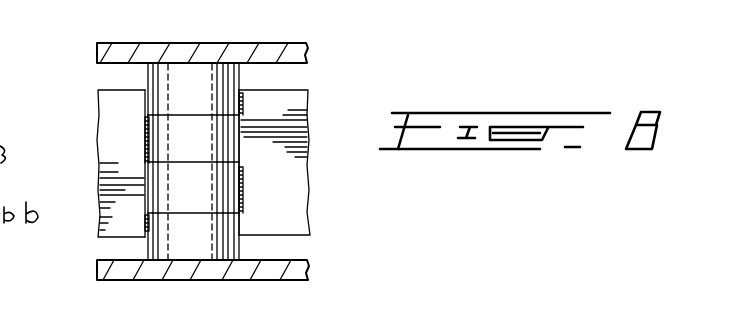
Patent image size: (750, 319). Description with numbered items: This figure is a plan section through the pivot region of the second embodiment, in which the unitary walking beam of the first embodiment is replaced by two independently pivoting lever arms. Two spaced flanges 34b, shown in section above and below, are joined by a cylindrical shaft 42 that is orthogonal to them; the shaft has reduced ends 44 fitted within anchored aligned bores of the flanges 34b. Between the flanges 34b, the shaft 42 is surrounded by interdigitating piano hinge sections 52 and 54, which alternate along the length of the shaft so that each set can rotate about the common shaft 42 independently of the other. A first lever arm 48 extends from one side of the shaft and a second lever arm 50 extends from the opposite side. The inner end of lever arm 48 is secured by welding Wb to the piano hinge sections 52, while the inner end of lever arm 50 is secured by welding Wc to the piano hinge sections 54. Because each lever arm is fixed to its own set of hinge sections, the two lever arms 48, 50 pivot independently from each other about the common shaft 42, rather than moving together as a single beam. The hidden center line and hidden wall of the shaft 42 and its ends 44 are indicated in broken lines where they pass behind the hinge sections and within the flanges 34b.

The flanges 34b is at (282, 43).
The cylindrical shaft 42 is at (170, 98).
The reduced ends 44 is at (212, 80).
The lever arm 48 is at (113, 112).
The lever arm 50 is at (292, 210).
The piano hinge section 52 is at (197, 140).
The piano hinge section 54 is at (200, 85).
The welding Wb is at (147, 220).
The welding Wc is at (240, 96).